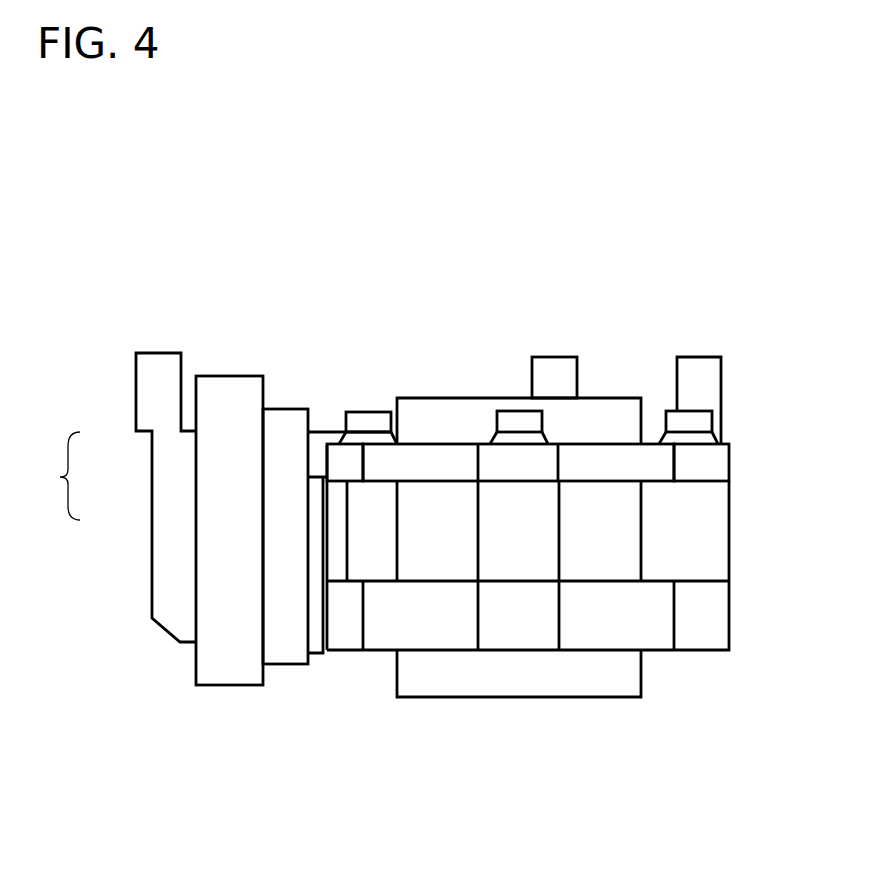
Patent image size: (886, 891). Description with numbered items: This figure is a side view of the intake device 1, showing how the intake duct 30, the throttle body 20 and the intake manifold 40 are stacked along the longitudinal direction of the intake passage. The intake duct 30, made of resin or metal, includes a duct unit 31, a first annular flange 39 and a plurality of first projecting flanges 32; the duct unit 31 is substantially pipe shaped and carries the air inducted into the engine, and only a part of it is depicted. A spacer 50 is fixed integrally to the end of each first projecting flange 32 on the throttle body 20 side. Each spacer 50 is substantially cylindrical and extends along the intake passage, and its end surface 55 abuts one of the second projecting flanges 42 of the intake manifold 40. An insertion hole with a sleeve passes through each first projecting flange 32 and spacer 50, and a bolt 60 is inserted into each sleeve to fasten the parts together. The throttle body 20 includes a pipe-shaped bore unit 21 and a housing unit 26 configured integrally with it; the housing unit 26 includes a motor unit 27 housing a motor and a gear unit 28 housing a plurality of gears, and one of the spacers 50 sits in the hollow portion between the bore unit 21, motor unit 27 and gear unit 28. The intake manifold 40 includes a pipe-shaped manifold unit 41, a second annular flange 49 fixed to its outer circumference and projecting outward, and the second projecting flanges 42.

The intake device 1 is at (730, 233).
The throttle body 20 is at (379, 550).
The bore unit 21 is at (418, 555).
The housing unit 26 is at (208, 519).
The motor unit 27 is at (322, 464).
The gear unit 28 is at (320, 509).
The intake duct 30 is at (606, 374).
The duct unit 31 is at (641, 420).
The first projecting flange 32 is at (729, 463).
The first annular flange 39 is at (435, 457).
The intake manifold 40 is at (669, 676).
The manifold unit 41 is at (641, 673).
The second projecting flange 42 is at (488, 615).
The second annular flange 49 is at (617, 638).
The spacer 50 is at (548, 540).
The end surface 55 is at (531, 581).
The bolt 60 is at (687, 411).